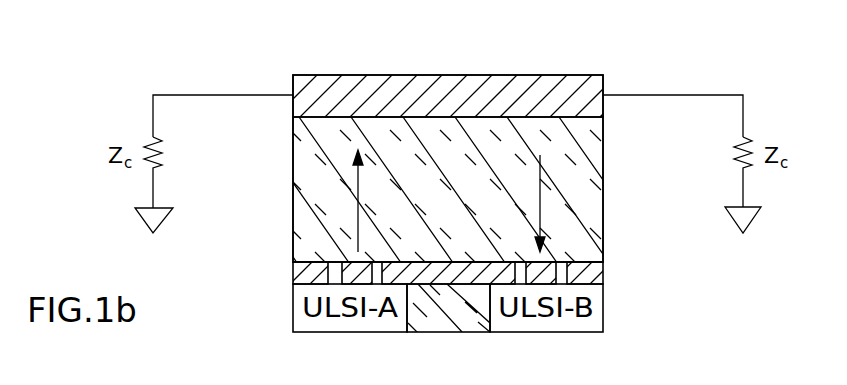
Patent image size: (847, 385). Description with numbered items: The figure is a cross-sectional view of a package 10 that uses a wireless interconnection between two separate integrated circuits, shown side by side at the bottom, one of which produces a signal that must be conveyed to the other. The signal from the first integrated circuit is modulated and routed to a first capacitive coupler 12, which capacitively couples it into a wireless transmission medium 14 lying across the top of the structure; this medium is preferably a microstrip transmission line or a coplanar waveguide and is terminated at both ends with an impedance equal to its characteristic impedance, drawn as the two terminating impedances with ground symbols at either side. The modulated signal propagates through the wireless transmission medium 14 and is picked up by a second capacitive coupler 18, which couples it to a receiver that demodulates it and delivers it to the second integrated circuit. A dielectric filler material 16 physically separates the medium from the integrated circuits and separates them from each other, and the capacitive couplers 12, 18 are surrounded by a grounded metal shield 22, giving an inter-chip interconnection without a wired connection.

The package 10 is at (555, 47).
The first capacitive coupler 12 is at (341, 260).
The wireless transmission medium 14 is at (347, 75).
The dielectric filler material 16 is at (433, 145).
The second capacitive coupler 18 is at (560, 260).
The grounded metal shield 22 is at (460, 262).